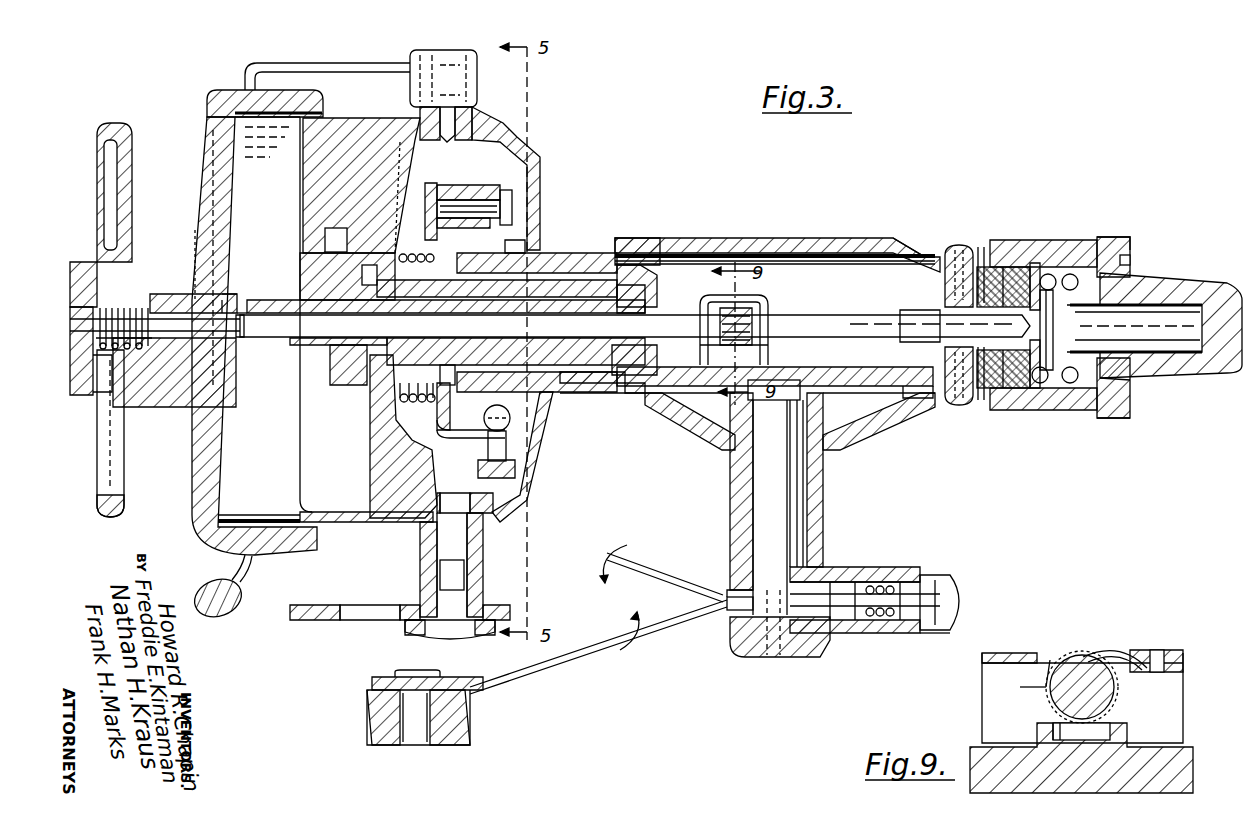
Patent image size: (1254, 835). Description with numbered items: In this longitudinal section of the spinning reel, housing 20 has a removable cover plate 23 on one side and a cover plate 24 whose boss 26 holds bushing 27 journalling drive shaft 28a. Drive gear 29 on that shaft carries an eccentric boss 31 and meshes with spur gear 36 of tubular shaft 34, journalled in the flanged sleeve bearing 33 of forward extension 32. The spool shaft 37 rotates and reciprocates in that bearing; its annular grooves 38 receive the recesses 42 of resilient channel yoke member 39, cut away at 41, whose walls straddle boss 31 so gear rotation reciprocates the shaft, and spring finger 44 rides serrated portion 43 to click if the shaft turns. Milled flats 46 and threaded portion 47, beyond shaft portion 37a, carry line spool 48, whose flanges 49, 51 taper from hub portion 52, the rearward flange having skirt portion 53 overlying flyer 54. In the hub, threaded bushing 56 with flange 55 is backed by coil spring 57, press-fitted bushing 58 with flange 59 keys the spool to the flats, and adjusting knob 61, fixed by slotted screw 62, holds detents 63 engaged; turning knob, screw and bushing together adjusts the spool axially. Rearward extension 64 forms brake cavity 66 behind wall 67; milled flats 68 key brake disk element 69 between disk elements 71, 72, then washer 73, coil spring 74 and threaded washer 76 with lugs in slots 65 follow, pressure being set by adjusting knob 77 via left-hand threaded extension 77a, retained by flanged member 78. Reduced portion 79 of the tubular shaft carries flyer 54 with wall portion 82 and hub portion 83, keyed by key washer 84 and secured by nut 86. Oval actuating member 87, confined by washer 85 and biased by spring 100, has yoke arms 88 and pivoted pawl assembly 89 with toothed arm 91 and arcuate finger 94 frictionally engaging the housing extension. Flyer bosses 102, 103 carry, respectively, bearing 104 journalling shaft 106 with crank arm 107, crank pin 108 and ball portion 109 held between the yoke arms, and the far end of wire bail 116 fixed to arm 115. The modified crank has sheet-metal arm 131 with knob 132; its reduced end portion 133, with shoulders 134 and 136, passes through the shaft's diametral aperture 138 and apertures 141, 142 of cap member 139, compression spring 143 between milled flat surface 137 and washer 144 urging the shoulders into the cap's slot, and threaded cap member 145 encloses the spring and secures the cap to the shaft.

In FIG. 3, the housing 20 is at (925, 238).
In FIG. 3, the cover plate 23 is at (710, 240).
In FIG. 3, the cover plate 24 is at (880, 418).
In FIG. 3, the boss 26 is at (820, 498).
In FIG. 3, the bushing 27 is at (820, 478).
In FIG. 3, the drive shaft 28a is at (790, 523).
In FIG. 3, the drive gear 29 is at (890, 367).
In FIG. 9, the drive gear 29 is at (1190, 772).
In FIG. 3, the boss 31 is at (695, 418).
In FIG. 9, the boss 31 is at (1180, 737).
In FIG. 3, the forward extension 32 is at (612, 255).
In FIG. 3, the flanged sleeve bearing 33 is at (565, 254).
In FIG. 3, the tubular shaft 34 is at (593, 392).
In FIG. 3, the spur gear 36 is at (650, 275).
In FIG. 3, the spool shaft 37 is at (860, 316).
In FIG. 9, the spool shaft 37 is at (1108, 700).
In FIG. 3, the shaft shoulder 37a is at (222, 300).
In FIG. 3, the annular grooves 38 is at (700, 300).
In FIG. 9, the annular grooves 38 is at (1085, 655).
In FIG. 3, the yoke member 39 is at (770, 352).
In FIG. 9, the yoke member 39 is at (1006, 650).
In FIG. 9, the cut-away portion 41 is at (1048, 666).
In FIG. 9, the recesses 42 is at (1120, 690).
In FIG. 3, the serrated portion 43 is at (752, 325).
In FIG. 9, the serrated portion 43 is at (1046, 692).
In FIG. 9, the spring finger 44 is at (1117, 648).
In FIG. 3, the milled flats 46 is at (240, 337).
In FIG. 3, the threaded portion 47 is at (150, 340).
In FIG. 3, the line spool 48 is at (200, 152).
In FIG. 3, the forward flange 49 is at (117, 123).
In FIG. 3, the rearward flange 51 is at (210, 104).
In FIG. 3, the hub portion 52 is at (165, 262).
In FIG. 3, the skirt portion 53 is at (322, 92).
In FIG. 3, the flyer 54 is at (518, 130).
In FIG. 3, the flange 55 is at (195, 230).
In FIG. 3, the bushing 56 is at (150, 296).
In FIG. 3, the coil spring 57 is at (140, 352).
In FIG. 3, the bushing 58 is at (228, 285).
In FIG. 3, the flange 59 is at (240, 292).
In FIG. 3, the adjusting knob 61 is at (85, 262).
In FIG. 3, the slotted screw 62 is at (76, 395).
In FIG. 3, the detents 63 is at (104, 200).
In FIG. 3, the rearward extension 64 is at (1050, 242).
In FIG. 3, the longitudinal slots 65 is at (1100, 260).
In FIG. 3, the brake cavity 66 is at (1010, 395).
In FIG. 3, the wall 67 is at (943, 272).
In FIG. 3, the milled flats 68 is at (918, 318).
In FIG. 3, the brake disk element 69 is at (1000, 270).
In FIG. 3, the brake disk element 71 is at (980, 247).
In FIG. 3, the brake disk element 72 is at (1015, 270).
In FIG. 3, the washer 73 is at (1047, 385).
In FIG. 3, the coil spring 74 is at (1070, 385).
In FIG. 3, the washer 76 is at (1130, 408).
In FIG. 3, the adjusting knob 77 is at (1155, 275).
In FIG. 3, the threaded extension 77a is at (1130, 385).
In FIG. 3, the flanged member 78 is at (1122, 240).
In FIG. 3, the reduced diameter portion 79 is at (370, 405).
In FIG. 3, the wall portion 82 is at (405, 192).
In FIG. 3, the hub portion 83 is at (408, 252).
In FIG. 3, the key washer 84 is at (338, 256).
In FIG. 3, the washer 85 is at (450, 386).
In FIG. 3, the nut 86 is at (352, 268).
In FIG. 3, the actuating member 87 is at (446, 398).
In FIG. 3, the yoke arms 88 is at (465, 440).
In FIG. 3, the pawl assembly 89 is at (458, 185).
In FIG. 3, the arm 91 is at (500, 212).
In FIG. 3, the resilient finger 94 is at (520, 248).
In FIG. 3, the spring 100 is at (413, 400).
In FIG. 3, the boss 102 is at (525, 515).
In FIG. 3, the boss 103 is at (477, 100).
In FIG. 3, the bearing 104 is at (480, 518).
In FIG. 3, the shaft 106 is at (478, 545).
In FIG. 3, the crank arm 107 is at (515, 475).
In FIG. 3, the crank pin 108 is at (508, 450).
In FIG. 3, the ball portion 109 is at (512, 418).
In FIG. 3, the arm 115 is at (340, 605).
In FIG. 3, the bail 116 is at (243, 560).
In FIG. 3, the arm 131 is at (608, 652).
In FIG. 3, the knob 132 is at (470, 718).
In FIG. 3, the end portion 133 is at (835, 633).
In FIG. 3, the shoulders 134 is at (727, 597).
In FIG. 3, the shoulders 136 is at (945, 580).
In FIG. 3, the milled flat surface 137 is at (840, 570).
In FIG. 3, the diametral aperture 138 is at (770, 660).
In FIG. 3, the cap member 139 is at (736, 655).
In FIG. 3, the diametral aperture 141 is at (730, 623).
In FIG. 3, the diametral aperture 142 is at (815, 657).
In FIG. 3, the compression spring 143 is at (890, 633).
In FIG. 3, the washer 144 is at (938, 630).
In FIG. 3, the cap member 145 is at (905, 575).